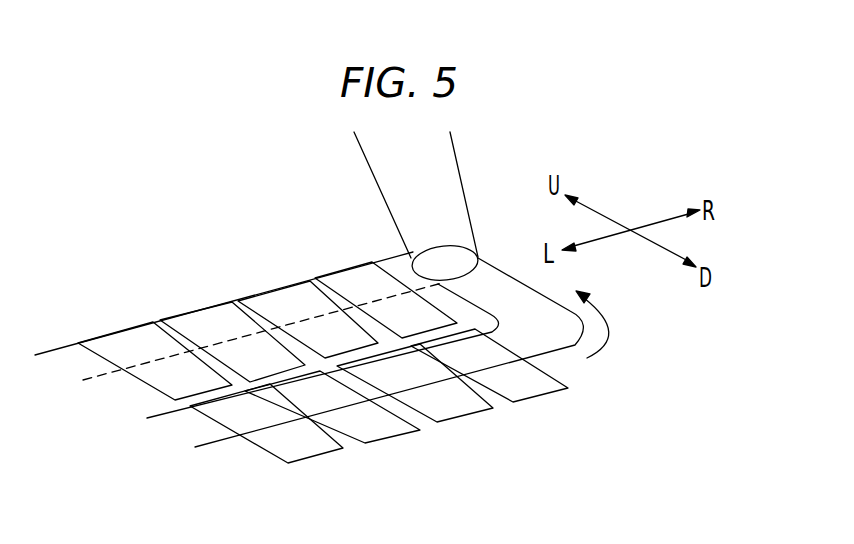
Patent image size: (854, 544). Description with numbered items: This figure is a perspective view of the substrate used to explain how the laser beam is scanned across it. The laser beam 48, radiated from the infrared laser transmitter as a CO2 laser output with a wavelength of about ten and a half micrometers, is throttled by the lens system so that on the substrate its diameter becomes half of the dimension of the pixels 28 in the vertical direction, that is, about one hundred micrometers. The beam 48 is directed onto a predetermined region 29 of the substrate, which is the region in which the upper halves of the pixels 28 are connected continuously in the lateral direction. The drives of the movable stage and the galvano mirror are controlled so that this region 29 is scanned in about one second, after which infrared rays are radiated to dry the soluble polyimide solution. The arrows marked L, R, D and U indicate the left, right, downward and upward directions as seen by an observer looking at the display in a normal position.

The laser beam 48 is at (466, 198).
The region 29 is at (503, 284).
The pixels 28 is at (468, 410).